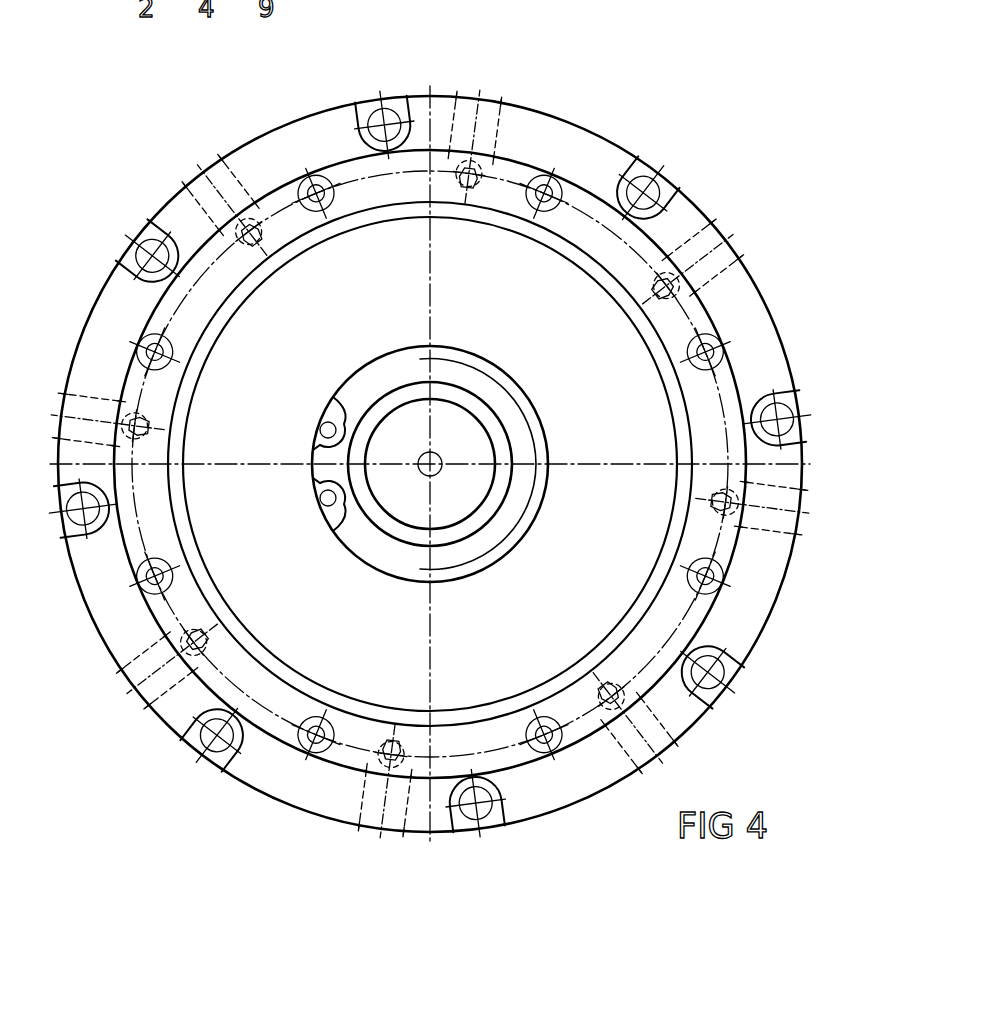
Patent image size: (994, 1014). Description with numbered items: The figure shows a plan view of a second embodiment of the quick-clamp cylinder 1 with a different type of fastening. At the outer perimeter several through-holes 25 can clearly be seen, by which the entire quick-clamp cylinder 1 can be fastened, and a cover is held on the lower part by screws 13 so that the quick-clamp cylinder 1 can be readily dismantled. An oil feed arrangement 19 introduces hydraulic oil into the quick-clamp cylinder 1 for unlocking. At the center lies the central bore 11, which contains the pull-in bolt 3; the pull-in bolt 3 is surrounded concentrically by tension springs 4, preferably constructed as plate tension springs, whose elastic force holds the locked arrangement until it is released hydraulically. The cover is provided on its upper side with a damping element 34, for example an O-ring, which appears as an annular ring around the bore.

The quick-clamp cylinder 1 is at (752, 170).
The pull-in bolt 3 is at (472, 489).
The tension springs 4 is at (468, 390).
The central bore 11 is at (492, 438).
The screws 13 is at (723, 350).
The oil feed arrangement 19 is at (727, 242).
The through-holes 25 is at (643, 163).
The damping element 34 is at (660, 580).